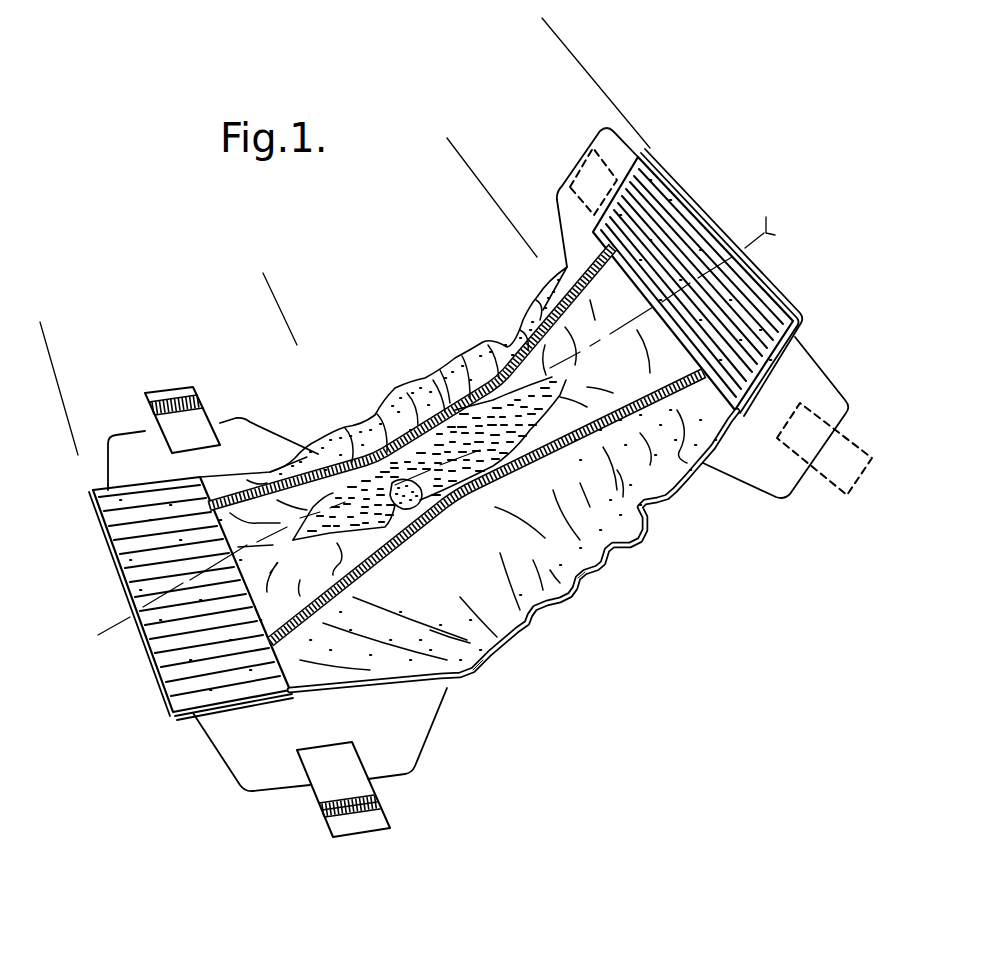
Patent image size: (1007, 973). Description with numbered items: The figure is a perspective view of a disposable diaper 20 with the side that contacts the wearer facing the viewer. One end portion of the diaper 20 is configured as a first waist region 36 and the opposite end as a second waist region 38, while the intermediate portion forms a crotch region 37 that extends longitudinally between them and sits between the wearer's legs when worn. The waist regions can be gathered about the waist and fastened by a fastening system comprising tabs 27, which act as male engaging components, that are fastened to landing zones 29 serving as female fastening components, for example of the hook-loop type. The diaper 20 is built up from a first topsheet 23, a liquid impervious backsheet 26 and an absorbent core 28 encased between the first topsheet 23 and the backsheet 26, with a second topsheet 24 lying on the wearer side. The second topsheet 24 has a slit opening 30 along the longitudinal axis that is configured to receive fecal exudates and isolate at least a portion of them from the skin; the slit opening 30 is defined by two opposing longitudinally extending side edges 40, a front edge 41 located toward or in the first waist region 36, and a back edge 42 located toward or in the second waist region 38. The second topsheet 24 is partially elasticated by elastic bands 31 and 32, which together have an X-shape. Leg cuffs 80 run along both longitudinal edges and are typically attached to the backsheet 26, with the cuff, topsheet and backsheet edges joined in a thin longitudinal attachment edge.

The diaper 20 is at (728, 162).
The first topsheet 23 is at (370, 525).
The second topsheet 24 is at (673, 493).
The liquid impervious backsheet 26 is at (404, 487).
The tabs 27 is at (175, 393).
The absorbent core 28 is at (347, 428).
The landing zones 29 is at (577, 160).
The slit opening 30 is at (433, 380).
The elastic band 31 is at (497, 475).
The elastic band 32 is at (407, 393).
The first waist region 36 is at (541, 22).
The crotch region 37 is at (450, 148).
The second waist region 38 is at (258, 284).
The longitudinally extending side edges 40 is at (467, 420).
The front edge 41 is at (552, 378).
The back edge 42 is at (290, 541).
The leg cuffs 80 is at (586, 574).